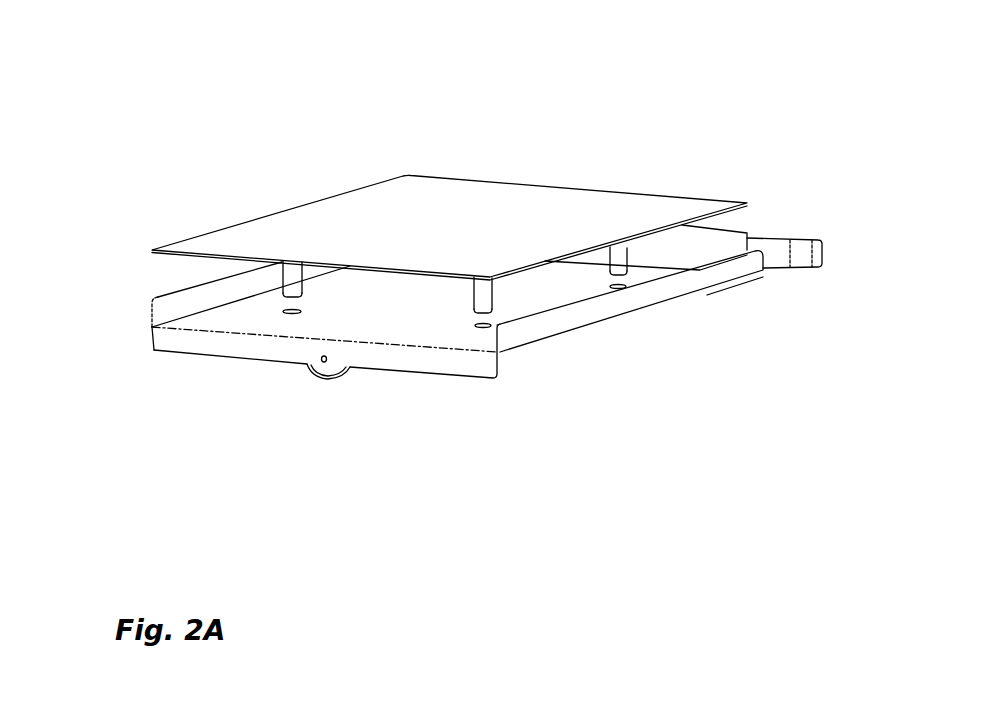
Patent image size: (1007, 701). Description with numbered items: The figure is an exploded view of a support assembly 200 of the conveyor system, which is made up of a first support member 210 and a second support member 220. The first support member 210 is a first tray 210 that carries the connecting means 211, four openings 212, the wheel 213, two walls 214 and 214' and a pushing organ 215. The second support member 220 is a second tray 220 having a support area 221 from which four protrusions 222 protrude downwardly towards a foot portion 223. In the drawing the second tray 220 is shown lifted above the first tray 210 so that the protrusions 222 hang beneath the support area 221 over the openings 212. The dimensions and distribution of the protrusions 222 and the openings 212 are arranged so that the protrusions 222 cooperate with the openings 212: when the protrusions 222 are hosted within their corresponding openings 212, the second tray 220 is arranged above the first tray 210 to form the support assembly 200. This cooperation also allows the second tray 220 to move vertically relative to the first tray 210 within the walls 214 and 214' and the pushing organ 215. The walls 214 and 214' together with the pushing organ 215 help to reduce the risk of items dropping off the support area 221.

The support assembly 200 is at (669, 72).
The first support member 210 is at (144, 290).
The connecting means 211 is at (770, 265).
The openings 212 is at (621, 290).
The wheel 213 is at (322, 379).
The wall 214 is at (215, 352).
The wall 214' is at (668, 301).
The pushing organ 215 is at (705, 245).
The second support member 220 is at (277, 201).
The support area 221 is at (475, 200).
The protrusions 222 is at (626, 249).
The foot portion 223 is at (619, 276).